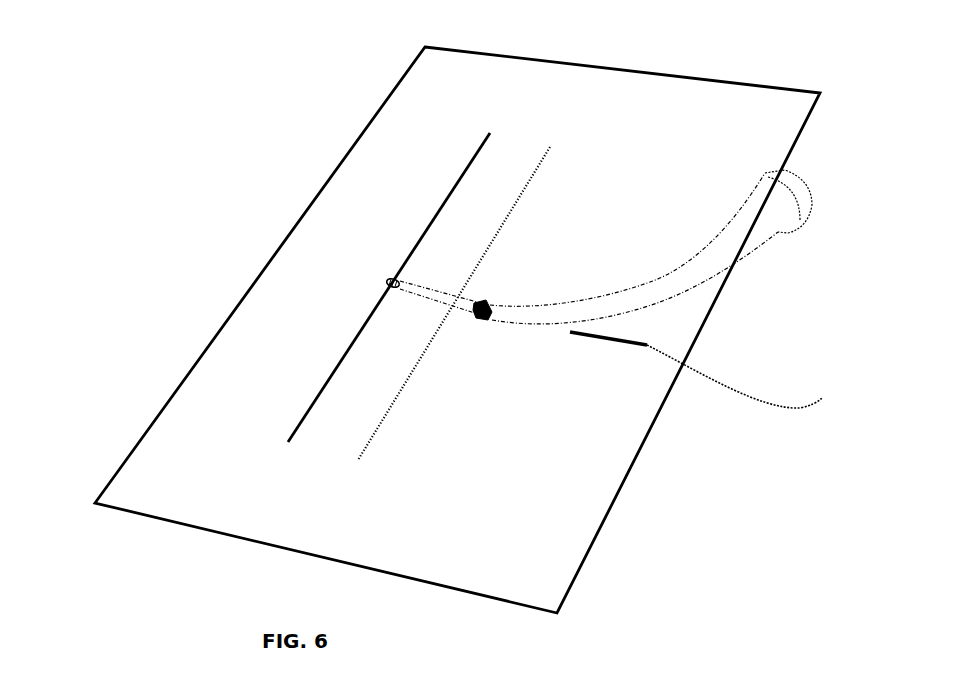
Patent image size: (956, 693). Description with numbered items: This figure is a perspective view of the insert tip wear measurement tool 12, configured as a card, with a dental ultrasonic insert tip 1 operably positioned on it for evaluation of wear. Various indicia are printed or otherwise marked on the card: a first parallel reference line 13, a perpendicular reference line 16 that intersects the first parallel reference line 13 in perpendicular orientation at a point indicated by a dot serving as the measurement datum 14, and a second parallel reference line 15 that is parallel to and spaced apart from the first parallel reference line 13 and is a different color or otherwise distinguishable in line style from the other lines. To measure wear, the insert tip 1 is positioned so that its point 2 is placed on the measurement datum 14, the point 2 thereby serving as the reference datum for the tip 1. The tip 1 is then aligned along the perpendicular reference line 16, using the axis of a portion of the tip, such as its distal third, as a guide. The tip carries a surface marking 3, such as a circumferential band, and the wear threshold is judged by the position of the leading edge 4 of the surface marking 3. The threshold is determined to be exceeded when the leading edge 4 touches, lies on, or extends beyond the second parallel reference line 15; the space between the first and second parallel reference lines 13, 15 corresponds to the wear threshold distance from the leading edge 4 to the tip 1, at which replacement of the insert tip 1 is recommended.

The insert tip 1 is at (757, 220).
The point 2 is at (392, 281).
The surface marking 3 is at (490, 315).
The leading edge 4 is at (482, 305).
The insert tip wear measurement tool 12 is at (638, 157).
The first parallel reference line 13 is at (310, 408).
The measurement datum 14 is at (387, 284).
The second parallel reference line 15 is at (423, 352).
The perpendicular reference line 16 is at (752, 376).